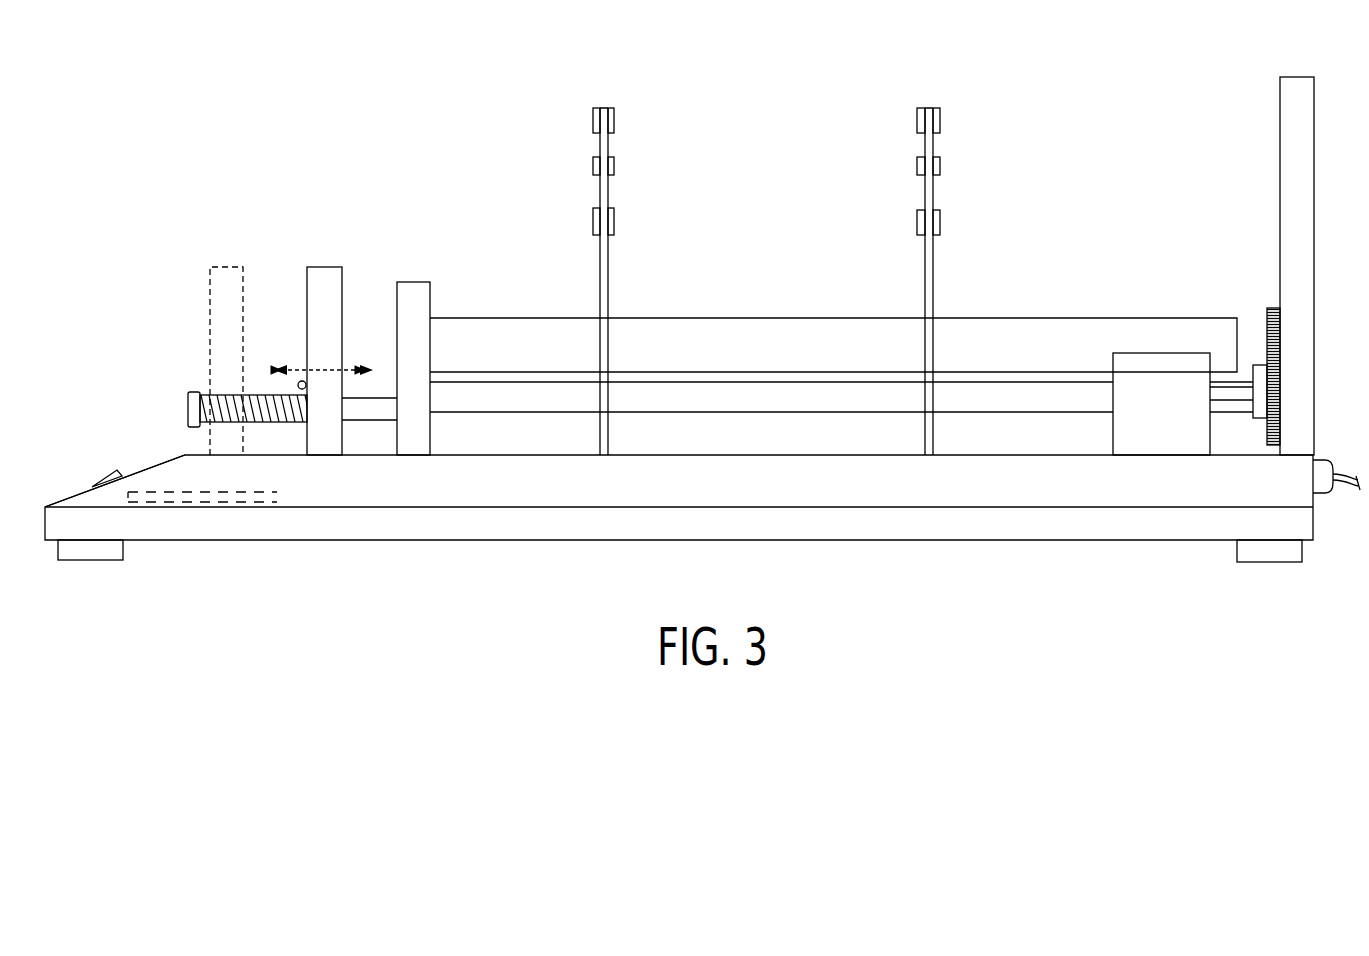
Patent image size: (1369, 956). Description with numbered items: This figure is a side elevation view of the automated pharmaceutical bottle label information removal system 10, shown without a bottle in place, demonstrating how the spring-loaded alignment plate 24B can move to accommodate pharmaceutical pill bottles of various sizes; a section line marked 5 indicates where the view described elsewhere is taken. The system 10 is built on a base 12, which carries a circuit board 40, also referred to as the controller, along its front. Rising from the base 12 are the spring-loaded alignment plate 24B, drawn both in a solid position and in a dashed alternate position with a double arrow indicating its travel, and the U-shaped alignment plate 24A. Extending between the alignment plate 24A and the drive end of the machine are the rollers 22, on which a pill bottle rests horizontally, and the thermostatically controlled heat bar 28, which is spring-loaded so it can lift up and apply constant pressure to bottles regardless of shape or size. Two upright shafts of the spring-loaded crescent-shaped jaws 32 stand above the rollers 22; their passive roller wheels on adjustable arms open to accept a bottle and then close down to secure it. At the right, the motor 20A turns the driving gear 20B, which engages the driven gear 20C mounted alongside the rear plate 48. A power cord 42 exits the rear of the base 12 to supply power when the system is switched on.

The section line of FIG. 5 is at (367, 90).
The automated pharmaceutical bottle label information removal system 10 is at (165, 141).
The base 12 is at (163, 475).
The circuit board 40 is at (213, 502).
The spring-loaded alignment plate 24B is at (218, 282).
The alignment plate 24A is at (410, 290).
The rollers 22 is at (682, 333).
The heat bar 28 is at (520, 397).
The spring-loaded crescent-shaped jaws 32 is at (648, 152).
The motor 20A is at (1160, 375).
The driven gear 20C is at (1267, 332).
The driving gear 20B is at (1267, 432).
The rear plate 48 is at (1305, 183).
The power cord 42 is at (1355, 480).